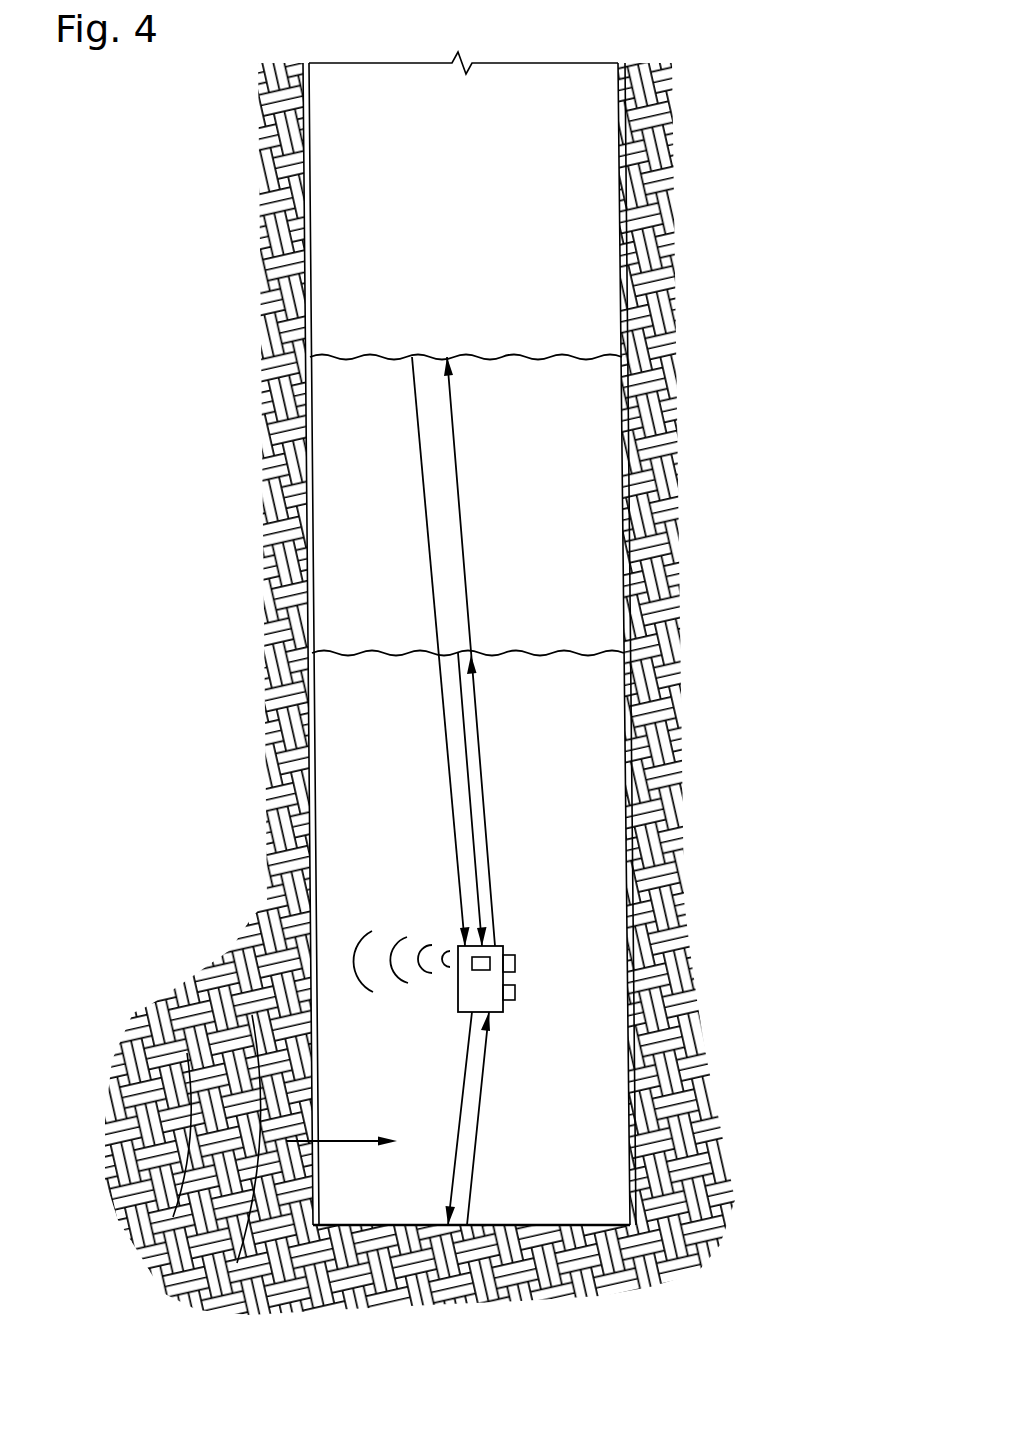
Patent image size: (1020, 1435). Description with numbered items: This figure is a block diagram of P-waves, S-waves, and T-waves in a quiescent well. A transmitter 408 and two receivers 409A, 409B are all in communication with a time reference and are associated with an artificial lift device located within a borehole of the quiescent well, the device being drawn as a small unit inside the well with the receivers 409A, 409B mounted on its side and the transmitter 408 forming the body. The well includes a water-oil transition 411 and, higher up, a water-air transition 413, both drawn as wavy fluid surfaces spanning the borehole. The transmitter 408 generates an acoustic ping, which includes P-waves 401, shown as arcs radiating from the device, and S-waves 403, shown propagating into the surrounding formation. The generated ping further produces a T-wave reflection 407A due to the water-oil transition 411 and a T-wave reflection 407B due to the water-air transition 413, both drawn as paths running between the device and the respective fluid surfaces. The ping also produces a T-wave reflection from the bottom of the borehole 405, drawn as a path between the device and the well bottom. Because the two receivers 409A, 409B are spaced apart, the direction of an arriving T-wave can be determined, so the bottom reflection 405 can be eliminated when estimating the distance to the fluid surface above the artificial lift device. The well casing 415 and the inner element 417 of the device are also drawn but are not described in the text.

The P-waves 401 is at (352, 952).
The S-waves 403 is at (365, 1141).
The T-wave reflection from the bottom of the borehole 405 is at (473, 1180).
The T-wave reflection due to the water-oil transition 407A is at (481, 767).
The T-wave reflection due to the water-air transition 407B is at (420, 463).
The transmitter 408 is at (450, 933).
The receiver 409A is at (515, 961).
The receiver 409B is at (515, 993).
The water-oil transition 411 is at (598, 655).
The water-air transition 413 is at (593, 357).
The casing 415 is at (308, 735).
The sensor 417 is at (486, 958).